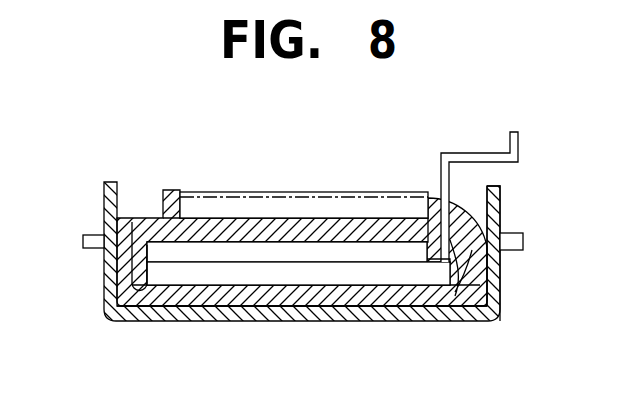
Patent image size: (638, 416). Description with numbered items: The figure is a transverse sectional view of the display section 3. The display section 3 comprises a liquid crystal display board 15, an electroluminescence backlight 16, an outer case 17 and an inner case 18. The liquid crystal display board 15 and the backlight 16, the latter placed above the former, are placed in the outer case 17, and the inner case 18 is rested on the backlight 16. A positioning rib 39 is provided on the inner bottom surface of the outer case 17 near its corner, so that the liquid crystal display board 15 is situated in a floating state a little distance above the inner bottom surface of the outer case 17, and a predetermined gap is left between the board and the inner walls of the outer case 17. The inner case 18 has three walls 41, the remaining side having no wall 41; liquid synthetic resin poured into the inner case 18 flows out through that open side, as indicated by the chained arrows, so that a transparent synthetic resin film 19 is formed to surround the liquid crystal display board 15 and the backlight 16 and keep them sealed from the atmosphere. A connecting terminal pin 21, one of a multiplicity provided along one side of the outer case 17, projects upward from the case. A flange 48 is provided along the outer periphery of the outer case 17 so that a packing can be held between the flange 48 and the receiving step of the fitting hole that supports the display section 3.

The display section 3 is at (497, 316).
The liquid crystal display board 15 is at (222, 280).
The backlight 16 is at (357, 255).
The outer case 17 is at (500, 208).
The inner case 18 is at (248, 191).
The transparent synthetic resin film 19 is at (342, 216).
The connecting terminal pin 21 is at (519, 140).
The positioning rib 39 is at (106, 283).
The wall 41 is at (152, 219).
The flange 48 is at (524, 243).